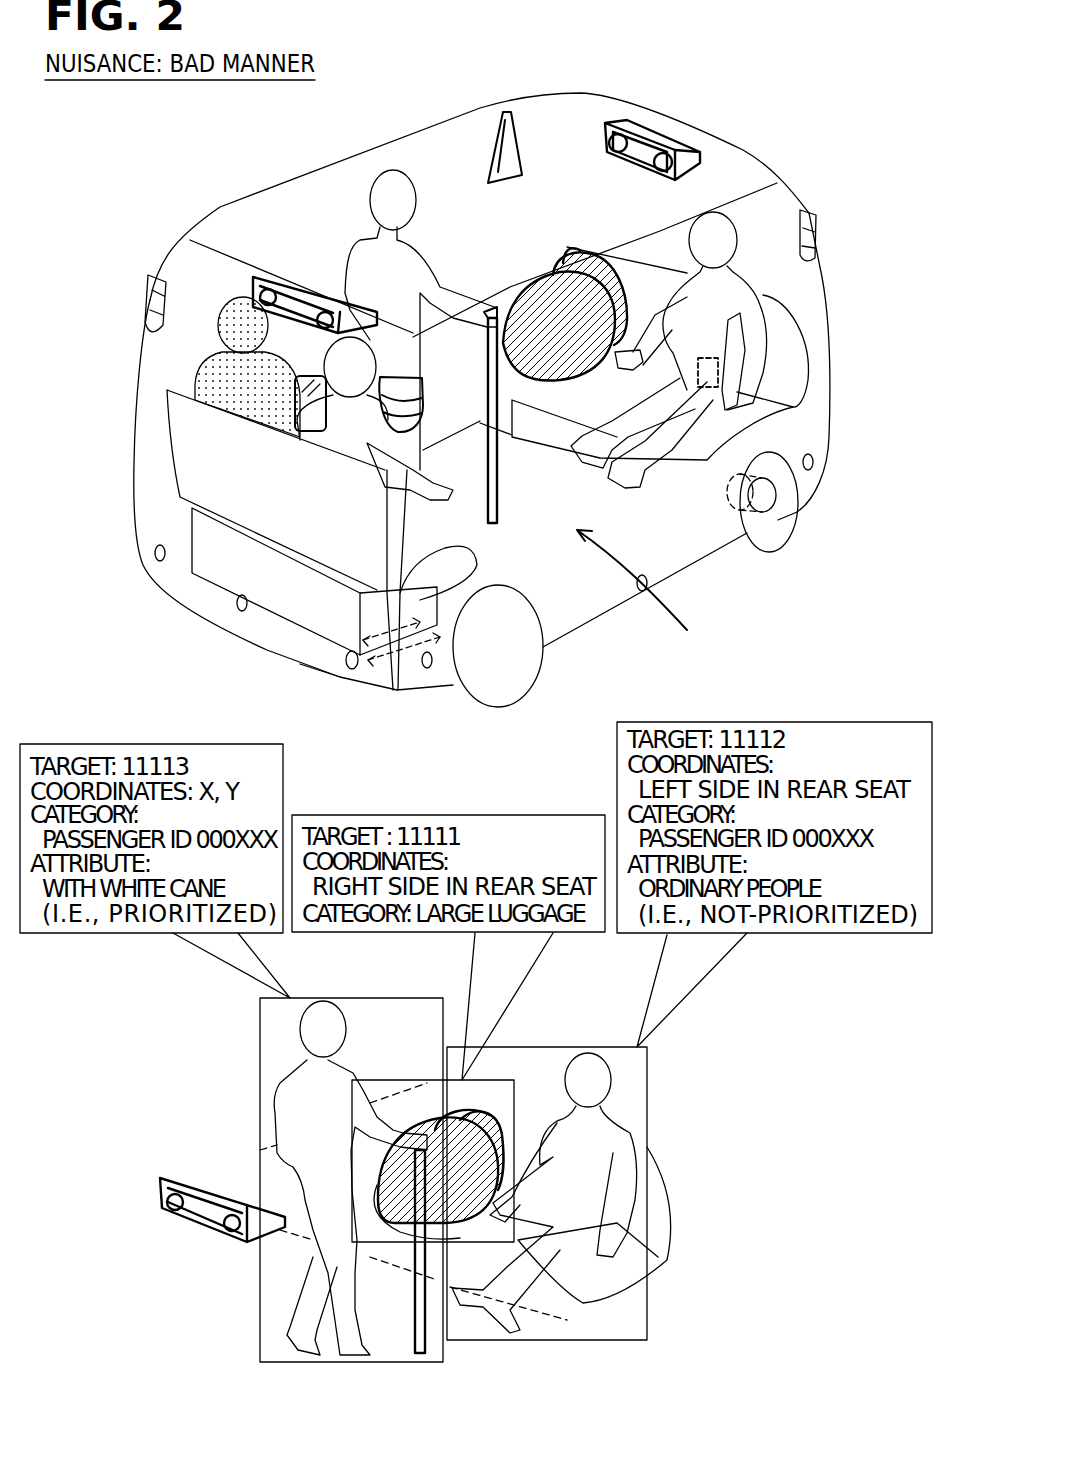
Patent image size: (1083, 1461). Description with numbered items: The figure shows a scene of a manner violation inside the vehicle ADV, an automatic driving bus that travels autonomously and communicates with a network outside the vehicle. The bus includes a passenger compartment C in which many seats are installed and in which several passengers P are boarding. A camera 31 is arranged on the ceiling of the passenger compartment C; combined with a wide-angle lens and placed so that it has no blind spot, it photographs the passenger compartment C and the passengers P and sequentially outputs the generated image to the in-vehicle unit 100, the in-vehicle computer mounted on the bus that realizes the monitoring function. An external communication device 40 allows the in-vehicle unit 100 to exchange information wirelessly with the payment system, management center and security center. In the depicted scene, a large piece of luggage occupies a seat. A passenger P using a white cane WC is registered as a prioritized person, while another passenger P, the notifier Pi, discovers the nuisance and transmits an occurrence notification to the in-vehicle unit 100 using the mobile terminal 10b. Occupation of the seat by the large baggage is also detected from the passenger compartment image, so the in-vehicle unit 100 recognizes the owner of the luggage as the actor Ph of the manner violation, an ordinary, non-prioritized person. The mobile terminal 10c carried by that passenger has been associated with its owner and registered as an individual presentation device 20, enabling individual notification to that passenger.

The vehicle ADV is at (463, 107).
The in-vehicle unit 100 is at (313, 673).
The external communication device 40 is at (508, 102).
The camera 31 is at (677, 140).
The passenger P is at (385, 170).
The notifier Pi is at (207, 380).
The actor Ph is at (738, 295).
The white cane WC is at (498, 497).
The individual presentation device 20 is at (733, 350).
The mobile terminal 10c is at (840, 353).
The mobile terminal 10b is at (295, 389).
The passenger compartment C is at (647, 593).